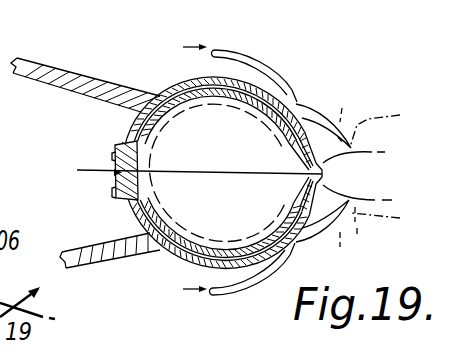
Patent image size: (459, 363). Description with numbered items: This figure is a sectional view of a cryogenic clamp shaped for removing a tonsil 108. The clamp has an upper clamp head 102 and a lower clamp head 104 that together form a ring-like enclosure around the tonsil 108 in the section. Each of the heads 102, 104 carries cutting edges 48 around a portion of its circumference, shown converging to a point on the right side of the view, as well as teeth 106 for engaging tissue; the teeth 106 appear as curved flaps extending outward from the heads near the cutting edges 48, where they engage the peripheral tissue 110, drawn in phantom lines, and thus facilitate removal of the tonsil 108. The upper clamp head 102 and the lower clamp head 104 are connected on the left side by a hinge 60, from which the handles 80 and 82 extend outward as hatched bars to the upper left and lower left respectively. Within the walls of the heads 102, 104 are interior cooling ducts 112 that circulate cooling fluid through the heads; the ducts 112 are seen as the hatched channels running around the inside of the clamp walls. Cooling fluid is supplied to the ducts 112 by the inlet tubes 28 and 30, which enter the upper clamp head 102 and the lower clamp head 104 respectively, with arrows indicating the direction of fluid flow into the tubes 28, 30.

The inlet tube 28 is at (268, 28).
The inlet tube 30 is at (243, 294).
The cutting edges 48 is at (323, 175).
The hinge 60 is at (183, 175).
The handle 80 is at (77, 96).
The handle 82 is at (97, 244).
The upper clamp head 102 is at (184, 82).
The lower clamp head 104 is at (182, 258).
The teeth 106 is at (318, 112).
The tonsil 108 is at (275, 133).
The peripheral tissue 110 is at (380, 172).
The interior cooling ducts 112 is at (136, 134).